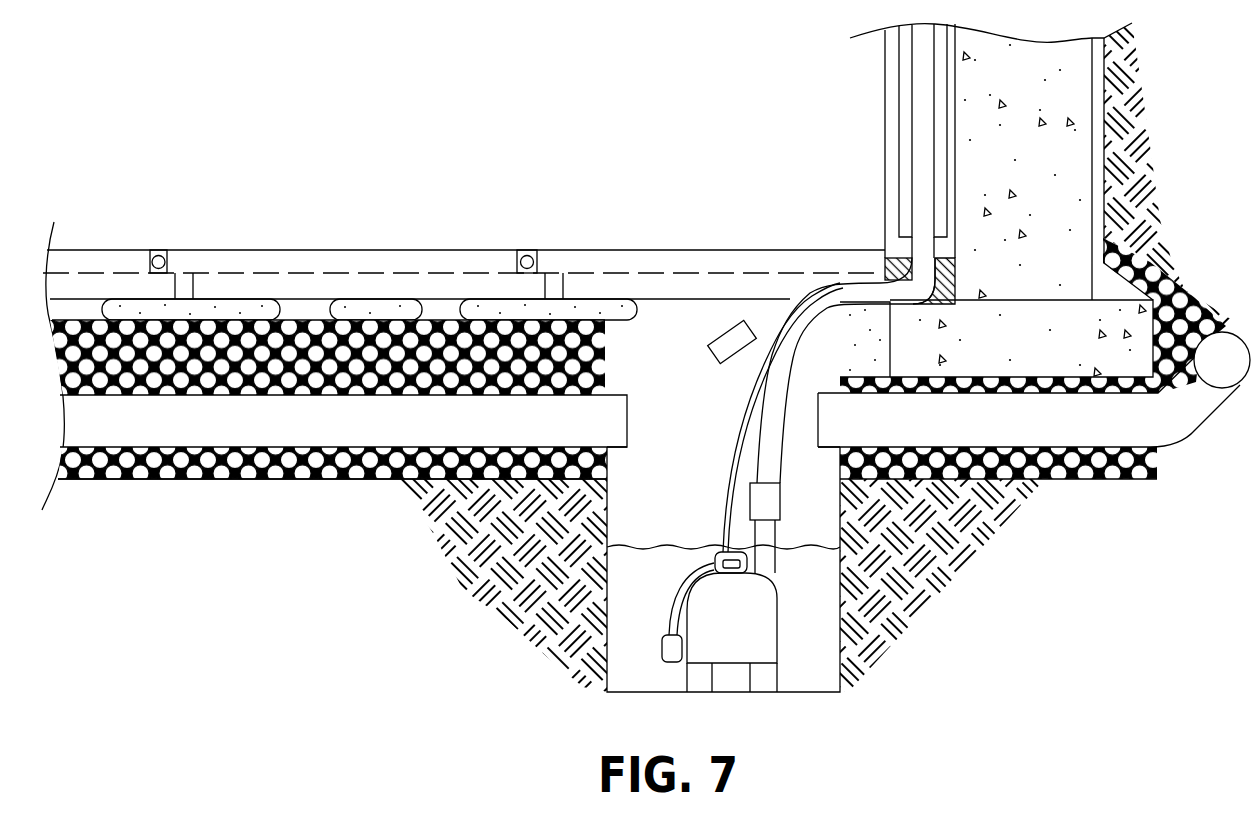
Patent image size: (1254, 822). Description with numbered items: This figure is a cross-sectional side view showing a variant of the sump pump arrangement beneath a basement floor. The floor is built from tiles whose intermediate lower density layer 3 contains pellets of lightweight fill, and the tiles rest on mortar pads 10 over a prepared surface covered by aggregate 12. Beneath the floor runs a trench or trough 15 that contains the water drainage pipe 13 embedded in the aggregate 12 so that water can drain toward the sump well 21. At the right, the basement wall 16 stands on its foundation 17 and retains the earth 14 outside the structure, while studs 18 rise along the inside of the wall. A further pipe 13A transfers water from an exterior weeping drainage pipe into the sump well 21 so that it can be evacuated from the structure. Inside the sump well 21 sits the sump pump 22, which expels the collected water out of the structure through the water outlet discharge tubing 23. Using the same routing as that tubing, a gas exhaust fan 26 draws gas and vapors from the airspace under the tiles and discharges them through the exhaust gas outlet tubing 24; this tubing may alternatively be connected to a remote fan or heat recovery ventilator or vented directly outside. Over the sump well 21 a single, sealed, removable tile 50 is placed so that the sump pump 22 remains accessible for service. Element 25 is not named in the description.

The intermediate lower density layer 3 is at (418, 288).
The mortar pad 10 is at (250, 300).
The aggregate 12 is at (280, 367).
The water drainage pipe 13 is at (286, 436).
The pipe 13A is at (960, 436).
The earth 14 is at (430, 528).
The trench or trough 15 is at (197, 482).
The basement wall 16 is at (1060, 99).
The foundation 17 is at (999, 354).
The stud 18 is at (898, 88).
The sump well 21 is at (575, 630).
The sump pump 22 is at (752, 638).
The water outlet discharge tubing 23 is at (912, 142).
The exhaust gas outlet tubing 24 is at (763, 320).
The check valve 25 is at (780, 510).
The gas exhaust fan 26 is at (728, 355).
The removable tile 50 is at (623, 250).